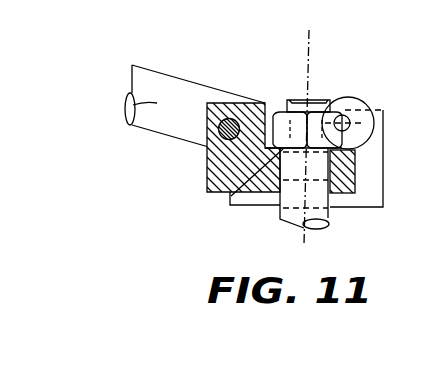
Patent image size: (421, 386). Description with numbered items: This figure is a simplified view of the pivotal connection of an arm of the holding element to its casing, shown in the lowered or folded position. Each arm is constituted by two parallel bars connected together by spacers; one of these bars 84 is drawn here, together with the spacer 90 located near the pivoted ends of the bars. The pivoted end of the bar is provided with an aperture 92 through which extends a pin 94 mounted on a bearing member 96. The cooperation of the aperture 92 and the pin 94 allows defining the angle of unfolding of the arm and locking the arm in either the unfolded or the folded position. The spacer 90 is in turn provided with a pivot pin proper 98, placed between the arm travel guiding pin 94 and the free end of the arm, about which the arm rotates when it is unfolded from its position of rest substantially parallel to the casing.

The bar 84 is at (125, 116).
The spacer 90 is at (207, 158).
The aperture 92 is at (342, 122).
The pin 94 is at (230, 198).
The bearing member 96 is at (362, 176).
The pivot pin 98 is at (230, 120).